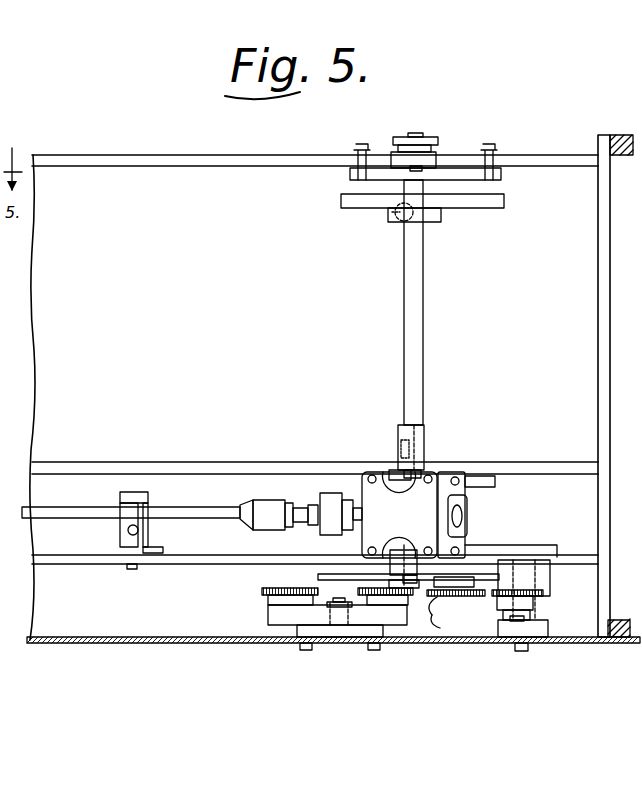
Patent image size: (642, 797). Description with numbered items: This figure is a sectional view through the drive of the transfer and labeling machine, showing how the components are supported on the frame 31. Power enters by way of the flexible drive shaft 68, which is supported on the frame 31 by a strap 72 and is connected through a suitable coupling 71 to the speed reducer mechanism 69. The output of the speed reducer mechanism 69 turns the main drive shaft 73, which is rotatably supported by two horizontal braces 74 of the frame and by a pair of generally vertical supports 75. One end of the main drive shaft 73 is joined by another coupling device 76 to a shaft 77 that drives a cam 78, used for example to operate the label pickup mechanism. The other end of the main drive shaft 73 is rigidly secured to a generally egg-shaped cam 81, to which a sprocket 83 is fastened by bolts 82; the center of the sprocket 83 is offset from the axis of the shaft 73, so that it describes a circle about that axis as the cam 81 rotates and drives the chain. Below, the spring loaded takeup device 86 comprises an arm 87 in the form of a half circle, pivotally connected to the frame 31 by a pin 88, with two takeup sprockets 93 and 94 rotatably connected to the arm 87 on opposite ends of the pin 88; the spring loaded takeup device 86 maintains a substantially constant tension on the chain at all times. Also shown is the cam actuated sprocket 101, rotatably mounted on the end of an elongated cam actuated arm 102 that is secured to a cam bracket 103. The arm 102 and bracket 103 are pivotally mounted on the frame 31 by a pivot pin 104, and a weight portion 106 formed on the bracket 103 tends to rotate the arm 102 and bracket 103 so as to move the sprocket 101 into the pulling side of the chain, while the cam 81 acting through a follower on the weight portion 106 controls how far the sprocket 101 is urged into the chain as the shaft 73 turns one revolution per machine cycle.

The frame 31 is at (175, 647).
The flexible drive shaft 68 is at (131, 500).
The speed reducer mechanism 69 is at (467, 517).
The coupling 71 is at (283, 494).
The strap 72 is at (123, 546).
The main drive shaft 73 is at (404, 478).
The horizontal braces 74 is at (193, 468).
The vertical supports 75 is at (487, 478).
The coupling device 76 is at (426, 441).
The shaft 77 is at (410, 300).
The cam 78 is at (345, 198).
The egg-shaped cam 81 is at (322, 577).
The bolts 82 is at (450, 610).
The sprocket 83 is at (451, 627).
The spring loaded takeup device 86 is at (259, 623).
The arm 87 is at (395, 622).
The pin 88 is at (332, 626).
The takeup sprocket 93 is at (268, 598).
The takeup sprocket 94 is at (418, 598).
The cam actuated sprocket 101 is at (492, 599).
The cam actuated arm 102 is at (545, 613).
The cam bracket 103 is at (545, 581).
The pivot pin 104 is at (533, 626).
The weight portion 106 is at (392, 583).